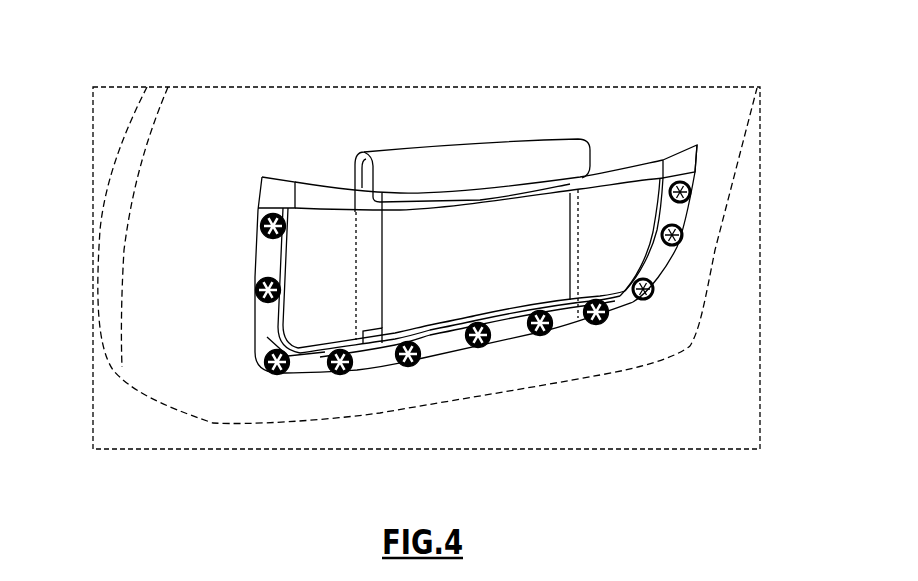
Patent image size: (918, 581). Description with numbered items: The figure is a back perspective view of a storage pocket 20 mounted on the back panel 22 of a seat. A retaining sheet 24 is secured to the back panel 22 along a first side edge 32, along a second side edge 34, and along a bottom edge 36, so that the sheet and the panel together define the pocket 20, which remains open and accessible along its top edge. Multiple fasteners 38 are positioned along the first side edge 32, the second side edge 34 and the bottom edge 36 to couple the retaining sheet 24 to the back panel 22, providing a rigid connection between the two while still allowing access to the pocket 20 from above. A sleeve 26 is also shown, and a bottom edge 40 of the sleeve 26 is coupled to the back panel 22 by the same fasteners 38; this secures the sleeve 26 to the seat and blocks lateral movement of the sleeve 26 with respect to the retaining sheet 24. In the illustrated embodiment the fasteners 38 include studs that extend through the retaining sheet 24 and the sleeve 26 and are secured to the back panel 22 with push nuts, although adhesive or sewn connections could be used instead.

The pocket 20 is at (422, 266).
The back panel 22 is at (727, 117).
The retaining sheet 24 is at (327, 258).
The sleeve 26 is at (543, 140).
The first side edge 32 is at (257, 193).
The second side edge 34 is at (688, 208).
The bottom edge 36 is at (505, 332).
The fasteners 38 is at (540, 336).
The bottom edge 40 is at (377, 354).